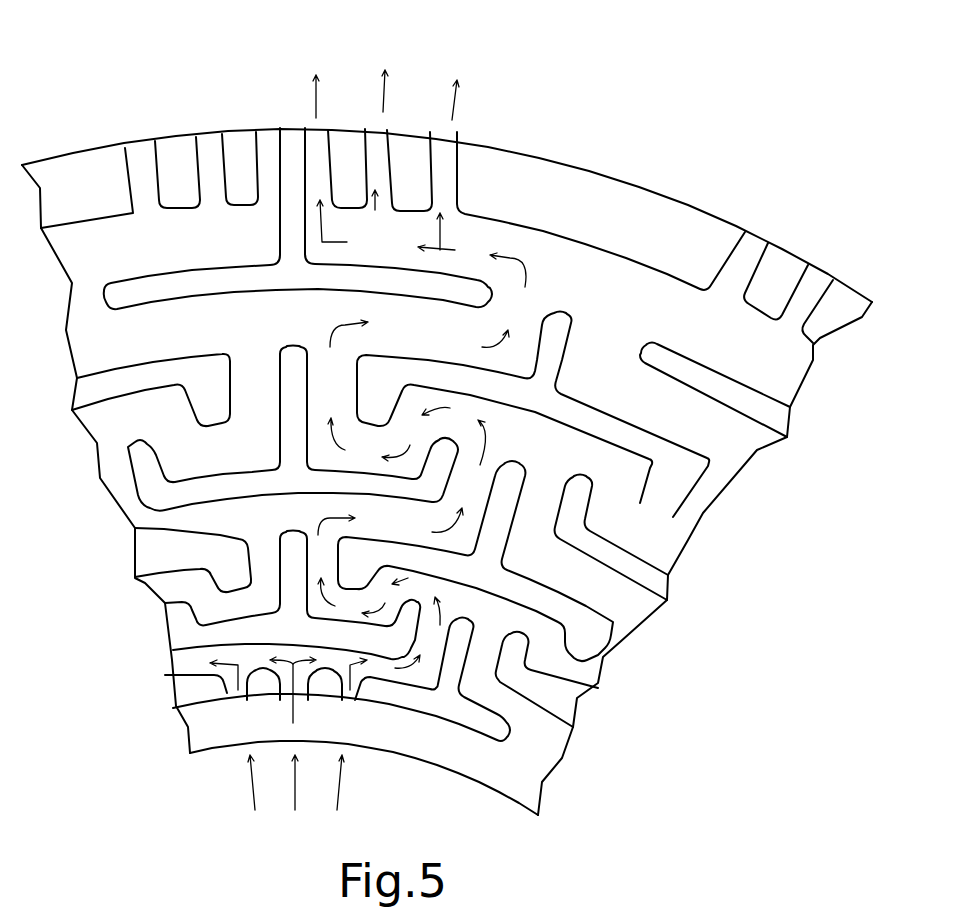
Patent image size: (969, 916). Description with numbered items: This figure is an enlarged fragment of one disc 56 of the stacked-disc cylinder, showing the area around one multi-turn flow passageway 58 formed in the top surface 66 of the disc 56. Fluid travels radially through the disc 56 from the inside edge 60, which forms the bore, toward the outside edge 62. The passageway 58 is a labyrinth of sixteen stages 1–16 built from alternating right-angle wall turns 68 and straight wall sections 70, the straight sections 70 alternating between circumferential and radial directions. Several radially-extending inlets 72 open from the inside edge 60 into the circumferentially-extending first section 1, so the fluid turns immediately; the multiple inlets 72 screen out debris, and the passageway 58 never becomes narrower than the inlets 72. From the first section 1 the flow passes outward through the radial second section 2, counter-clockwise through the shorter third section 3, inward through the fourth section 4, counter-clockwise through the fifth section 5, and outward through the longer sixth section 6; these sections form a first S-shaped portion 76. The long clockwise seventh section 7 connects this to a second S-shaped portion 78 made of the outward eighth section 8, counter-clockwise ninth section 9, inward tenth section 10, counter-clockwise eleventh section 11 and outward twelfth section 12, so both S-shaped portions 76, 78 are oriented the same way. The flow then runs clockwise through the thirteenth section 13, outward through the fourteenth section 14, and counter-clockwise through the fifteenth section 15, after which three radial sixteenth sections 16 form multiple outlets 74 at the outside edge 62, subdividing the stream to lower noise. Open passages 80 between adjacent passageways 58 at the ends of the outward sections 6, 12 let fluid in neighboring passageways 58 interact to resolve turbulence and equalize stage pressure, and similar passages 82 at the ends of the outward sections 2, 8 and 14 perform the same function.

The disc 56 is at (132, 96).
The flow passageway 58 is at (145, 270).
The inside edge 60 is at (450, 770).
The outside edge 62 is at (655, 187).
The top surface 66 is at (548, 190).
The right-angle wall turn 68 is at (578, 393).
The straight wall section 70 is at (590, 320).
The inlet 72 is at (235, 697).
The outlet 74 is at (373, 128).
The first S-shaped portion 76 is at (461, 586).
The second S-shaped portion 78 is at (521, 426).
The passage 80 is at (300, 318).
The passage 82 is at (573, 282).
The first straight section 1 is at (395, 663).
The second straight section 2 is at (428, 625).
The third straight section 3 is at (410, 587).
The fourth straight section 4 is at (377, 601).
The fifth straight section 5 is at (336, 598).
The sixth straight section 6 is at (333, 545).
The seventh straight section 7 is at (433, 522).
The eighth straight section 8 is at (473, 458).
The ninth straight section 9 is at (447, 415).
The tenth straight section 10 is at (402, 440).
The eleventh straight section 11 is at (350, 440).
The twelfth straight section 12 is at (343, 359).
The thirteenth straight section 13 is at (471, 335).
The fourteenth straight section 14 is at (508, 286).
The fifteenth straight section 15 is at (410, 221).
The sixteenth straight section 16 is at (326, 200).